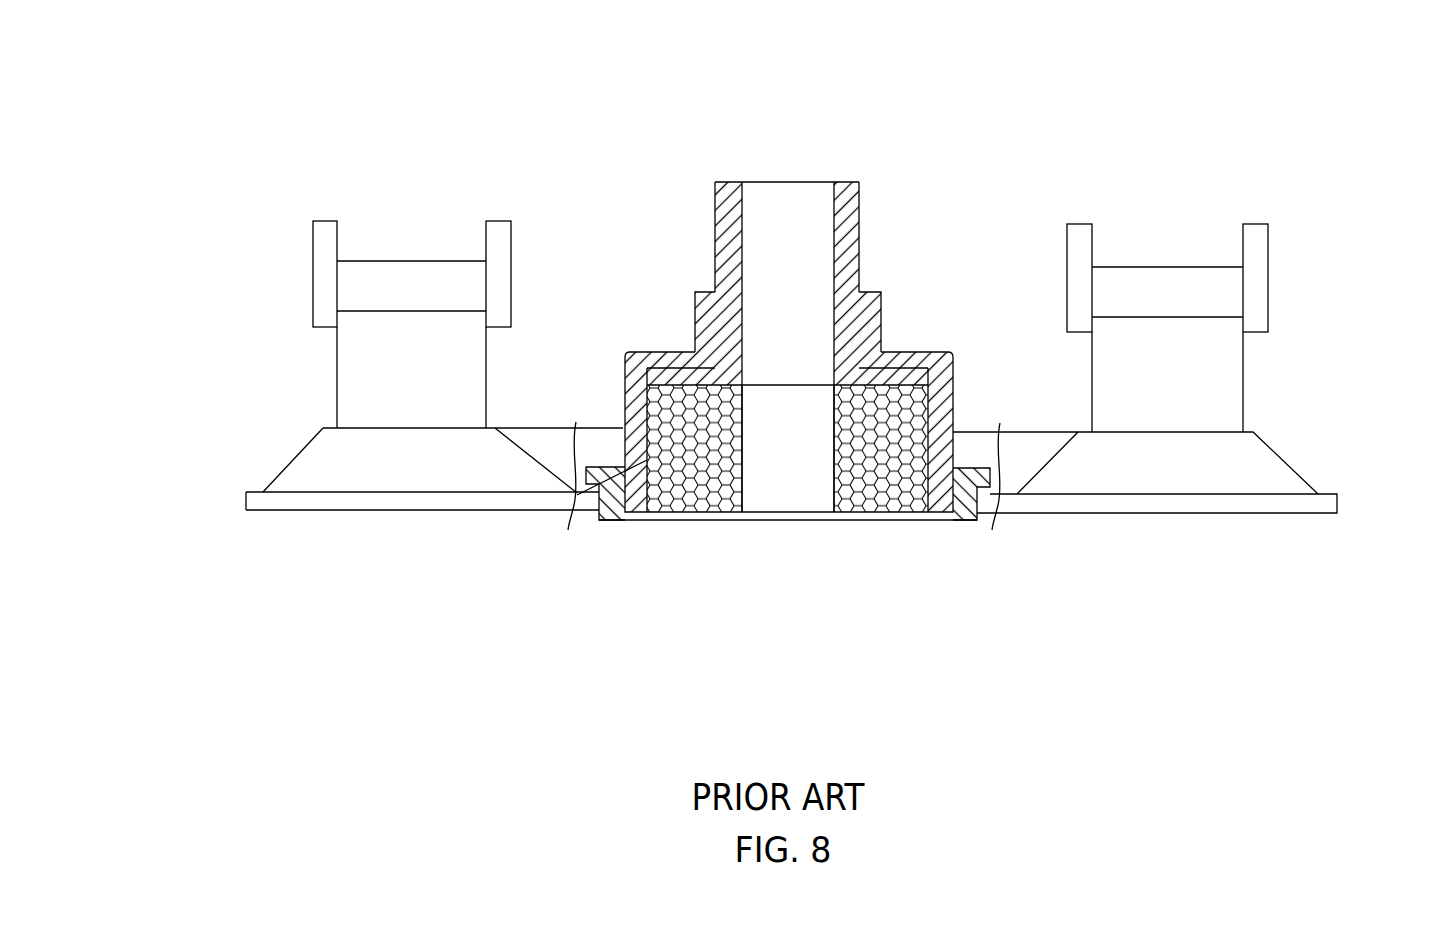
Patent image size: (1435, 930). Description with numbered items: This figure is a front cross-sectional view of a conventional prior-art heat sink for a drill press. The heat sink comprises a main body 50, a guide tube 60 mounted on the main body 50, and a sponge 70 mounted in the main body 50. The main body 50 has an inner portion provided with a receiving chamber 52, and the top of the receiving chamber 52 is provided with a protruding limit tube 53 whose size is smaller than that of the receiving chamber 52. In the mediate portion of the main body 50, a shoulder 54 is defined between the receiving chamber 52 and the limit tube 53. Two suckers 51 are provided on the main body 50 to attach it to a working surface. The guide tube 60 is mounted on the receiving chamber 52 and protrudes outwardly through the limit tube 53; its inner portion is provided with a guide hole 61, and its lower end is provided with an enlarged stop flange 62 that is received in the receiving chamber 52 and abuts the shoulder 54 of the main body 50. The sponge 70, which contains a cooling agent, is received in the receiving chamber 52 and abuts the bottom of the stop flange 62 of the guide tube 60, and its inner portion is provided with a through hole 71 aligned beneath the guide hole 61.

The main body 50 is at (305, 524).
The suckers 51 is at (403, 373).
The receiving chamber 52 is at (572, 515).
The limit tube 53 is at (695, 292).
The shoulder 54 is at (663, 341).
The guide tube 60 is at (800, 368).
The guide hole 61 is at (780, 242).
The stop flange 62 is at (884, 372).
The sponge 70 is at (905, 505).
The through hole 71 is at (790, 487).